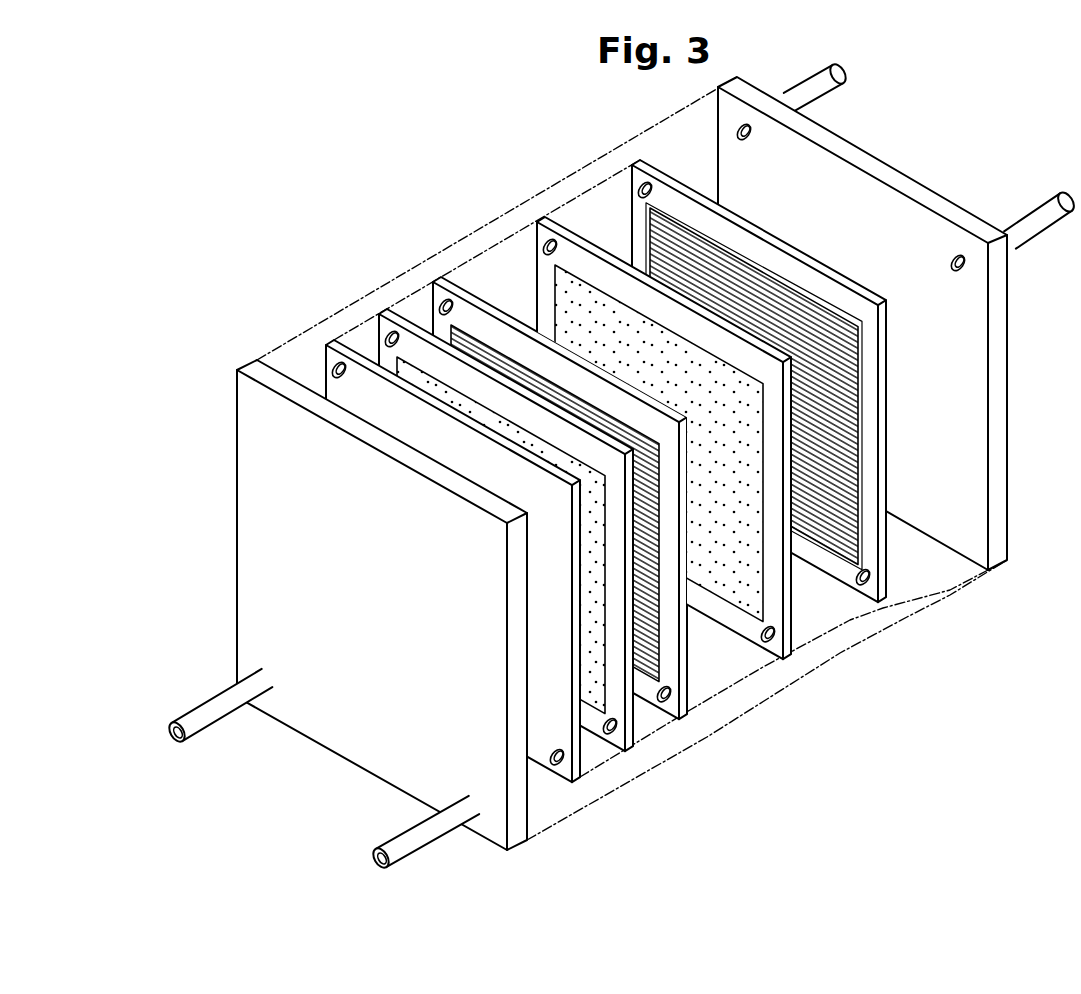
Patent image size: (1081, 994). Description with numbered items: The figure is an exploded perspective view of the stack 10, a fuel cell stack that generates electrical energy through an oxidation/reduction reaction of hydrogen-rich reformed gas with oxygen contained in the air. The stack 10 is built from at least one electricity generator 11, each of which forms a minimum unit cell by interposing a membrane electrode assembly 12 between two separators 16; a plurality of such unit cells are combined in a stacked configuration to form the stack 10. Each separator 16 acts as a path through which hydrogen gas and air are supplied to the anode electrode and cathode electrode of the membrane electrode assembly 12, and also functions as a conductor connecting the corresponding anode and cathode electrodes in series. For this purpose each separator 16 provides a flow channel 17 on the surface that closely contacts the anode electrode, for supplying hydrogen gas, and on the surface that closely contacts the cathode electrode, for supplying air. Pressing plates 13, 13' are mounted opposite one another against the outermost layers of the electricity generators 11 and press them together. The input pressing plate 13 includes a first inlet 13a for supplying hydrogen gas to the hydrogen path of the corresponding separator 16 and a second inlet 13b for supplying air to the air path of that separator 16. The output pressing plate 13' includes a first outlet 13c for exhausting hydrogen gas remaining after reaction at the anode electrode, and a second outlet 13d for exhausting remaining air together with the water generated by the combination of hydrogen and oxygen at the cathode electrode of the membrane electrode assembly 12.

The stack 10 is at (936, 80).
The electricity generator 11 is at (687, 467).
The membrane electrode assembly 12 is at (693, 460).
The pressing plate 13 is at (884, 323).
The pressing plate 13' is at (353, 605).
The first inlet 13a is at (803, 81).
The second inlet 13b is at (1029, 213).
The first outlet 13c is at (423, 843).
The second outlet 13d is at (210, 703).
The separator 16 is at (884, 592).
The flow channel 17 is at (813, 556).